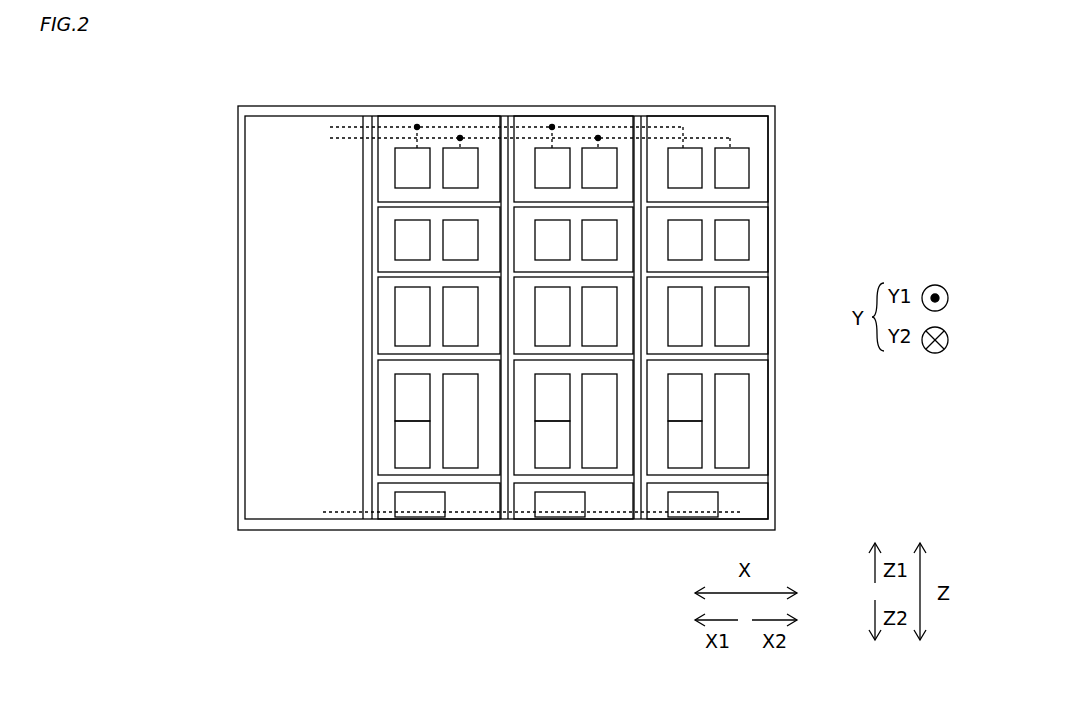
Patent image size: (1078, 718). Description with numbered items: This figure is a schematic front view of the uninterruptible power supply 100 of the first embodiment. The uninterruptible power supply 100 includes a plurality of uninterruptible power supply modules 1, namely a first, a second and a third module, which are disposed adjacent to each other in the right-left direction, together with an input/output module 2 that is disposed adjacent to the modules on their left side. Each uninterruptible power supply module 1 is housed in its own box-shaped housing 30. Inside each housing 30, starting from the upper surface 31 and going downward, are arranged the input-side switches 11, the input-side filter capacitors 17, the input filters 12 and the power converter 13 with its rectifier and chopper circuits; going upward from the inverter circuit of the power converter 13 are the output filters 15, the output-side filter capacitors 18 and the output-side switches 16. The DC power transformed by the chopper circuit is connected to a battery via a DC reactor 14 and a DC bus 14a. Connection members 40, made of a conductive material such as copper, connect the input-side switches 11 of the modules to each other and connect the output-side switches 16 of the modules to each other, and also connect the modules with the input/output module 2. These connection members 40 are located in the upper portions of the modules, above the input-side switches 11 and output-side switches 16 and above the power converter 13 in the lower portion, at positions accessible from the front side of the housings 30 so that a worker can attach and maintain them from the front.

The uninterruptible power supply 100 is at (205, 46).
The input/output module 2 is at (303, 104).
The uninterruptible power supply module 1 is at (584, 307).
The housing 30 is at (404, 105).
The upper surface 31 is at (562, 105).
The input-side switch 11 is at (702, 155).
The input filter 12 is at (693, 318).
The power converter 13 is at (693, 400).
The DC reactor 14 is at (697, 528).
The DC bus 14a is at (347, 521).
The output filter 15 is at (740, 328).
The output-side switch 16 is at (740, 167).
The input-side filter capacitor 17 is at (688, 240).
The output-side filter capacitor 18 is at (735, 248).
The connection member 40 is at (349, 124).